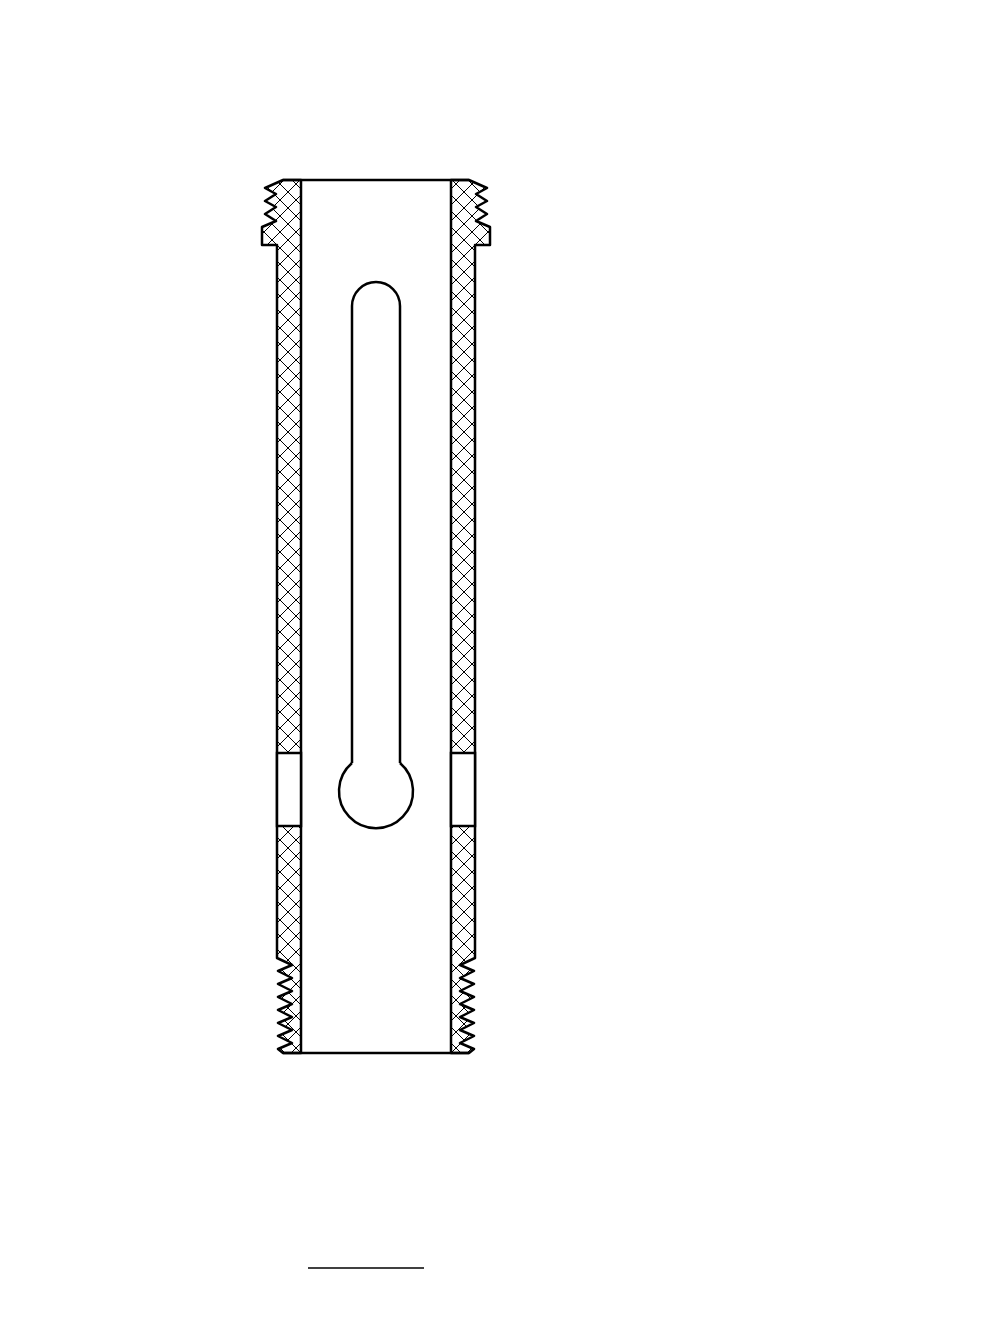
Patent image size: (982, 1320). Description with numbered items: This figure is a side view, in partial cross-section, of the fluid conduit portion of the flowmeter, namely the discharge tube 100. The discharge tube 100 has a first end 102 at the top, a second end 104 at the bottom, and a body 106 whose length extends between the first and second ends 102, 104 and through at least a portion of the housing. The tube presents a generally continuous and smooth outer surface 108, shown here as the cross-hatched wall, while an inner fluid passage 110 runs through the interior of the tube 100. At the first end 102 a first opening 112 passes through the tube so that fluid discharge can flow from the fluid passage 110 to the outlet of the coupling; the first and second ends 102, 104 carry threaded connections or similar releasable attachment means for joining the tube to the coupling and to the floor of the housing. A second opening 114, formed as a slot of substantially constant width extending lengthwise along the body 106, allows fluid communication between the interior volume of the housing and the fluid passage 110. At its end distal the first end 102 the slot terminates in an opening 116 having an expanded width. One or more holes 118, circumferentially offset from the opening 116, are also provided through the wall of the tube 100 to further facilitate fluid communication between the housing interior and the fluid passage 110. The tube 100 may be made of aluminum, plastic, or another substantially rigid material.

The discharge tube 100 is at (650, 168).
The first end 102 is at (418, 88).
The second end 104 is at (352, 1075).
The body 106 is at (518, 665).
The outer surface 108 is at (280, 572).
The fluid passage 110 is at (423, 447).
The first opening 112 is at (360, 178).
The second opening 114 is at (375, 485).
The opening having an expanded width 116 is at (365, 802).
The holes 118 is at (290, 792).